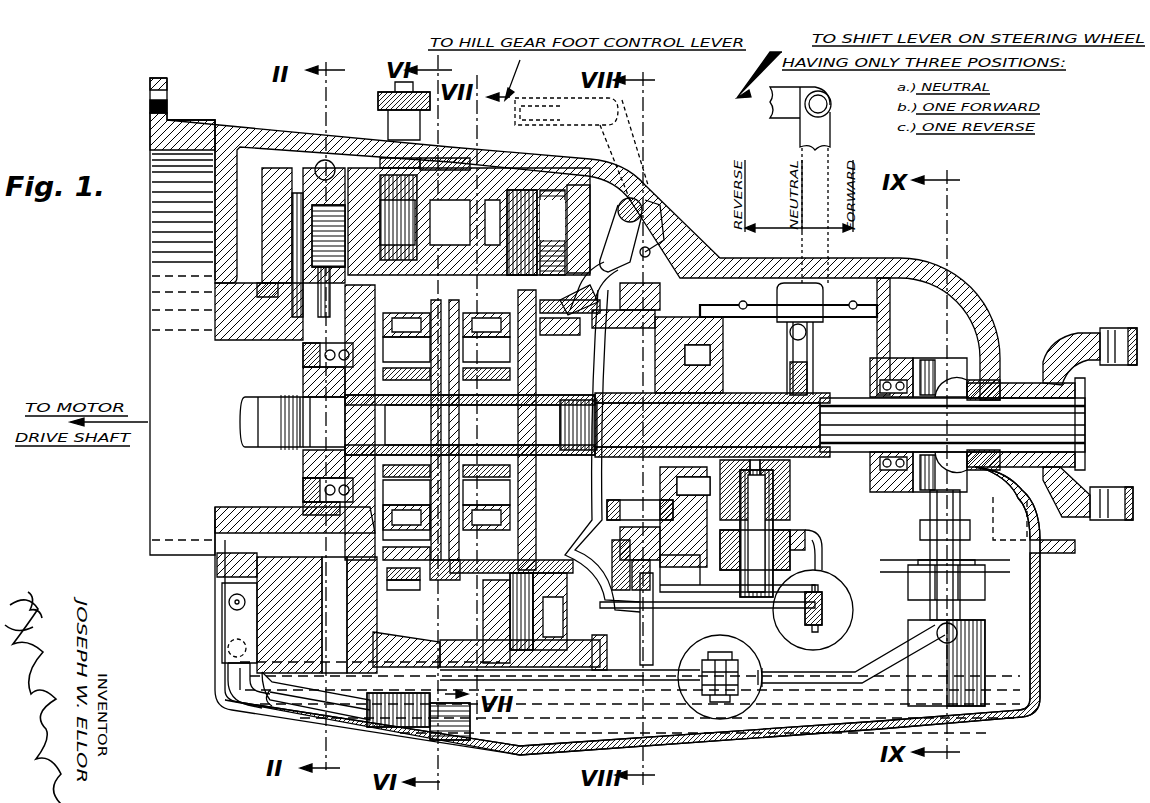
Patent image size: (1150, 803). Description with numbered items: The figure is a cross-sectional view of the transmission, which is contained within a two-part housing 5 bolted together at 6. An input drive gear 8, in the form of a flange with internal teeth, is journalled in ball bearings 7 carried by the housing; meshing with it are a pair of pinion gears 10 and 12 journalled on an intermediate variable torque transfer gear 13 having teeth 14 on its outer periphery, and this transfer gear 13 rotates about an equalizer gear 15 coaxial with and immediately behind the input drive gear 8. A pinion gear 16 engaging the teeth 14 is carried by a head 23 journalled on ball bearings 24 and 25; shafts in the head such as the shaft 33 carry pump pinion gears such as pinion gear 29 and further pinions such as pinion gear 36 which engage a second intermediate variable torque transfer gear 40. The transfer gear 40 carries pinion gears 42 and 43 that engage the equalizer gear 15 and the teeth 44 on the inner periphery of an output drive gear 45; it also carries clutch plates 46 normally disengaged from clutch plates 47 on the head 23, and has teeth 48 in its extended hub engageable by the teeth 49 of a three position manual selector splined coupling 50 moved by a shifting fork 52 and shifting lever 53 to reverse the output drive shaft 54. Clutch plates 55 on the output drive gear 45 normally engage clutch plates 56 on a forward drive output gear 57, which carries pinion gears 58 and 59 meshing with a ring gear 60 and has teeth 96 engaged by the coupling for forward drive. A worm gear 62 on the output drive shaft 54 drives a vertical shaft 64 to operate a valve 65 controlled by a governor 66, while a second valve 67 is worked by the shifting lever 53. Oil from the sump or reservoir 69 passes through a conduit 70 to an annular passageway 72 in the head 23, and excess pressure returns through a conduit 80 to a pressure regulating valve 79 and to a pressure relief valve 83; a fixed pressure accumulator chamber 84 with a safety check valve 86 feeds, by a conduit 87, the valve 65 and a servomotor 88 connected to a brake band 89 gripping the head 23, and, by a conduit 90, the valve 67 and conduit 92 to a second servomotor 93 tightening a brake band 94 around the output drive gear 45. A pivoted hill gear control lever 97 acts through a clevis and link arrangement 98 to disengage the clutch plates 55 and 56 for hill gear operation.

The two-part housing 5 is at (250, 147).
The bolts 6 is at (388, 115).
The ball bearings 7 is at (303, 352).
The input drive gear 8 is at (303, 380).
The pinion gear 10 is at (406, 346).
The pinion gear 12 is at (406, 502).
The intermediate variable torque transfer gear 13 is at (403, 580).
The teeth 14 is at (418, 590).
The intermediate variable torque transfer equalizer gear 15 is at (470, 425).
The pinion gear 16 is at (457, 165).
The head 23 is at (300, 700).
The ball bearing 24 is at (257, 290).
The ball bearing 25 is at (372, 308).
The pinion gear 29 is at (318, 160).
The shaft 33 is at (275, 222).
The pinion gear 36 is at (480, 168).
The second intermediate variable torque transfer gear 40 is at (459, 415).
The pinion gear 42 is at (486, 346).
The pinion gear 43 is at (486, 497).
The teeth 44 is at (460, 580).
The output drive gear 45 is at (570, 305).
The clutch plates 46 is at (545, 192).
The clutch plates 47 is at (518, 192).
The teeth 48 is at (507, 430).
The teeth 49 is at (690, 425).
The three position manual selector splined coupling 50 is at (762, 393).
The shifting fork 52 is at (790, 480).
The shifting lever 53 is at (832, 120).
The output drive shaft 54 is at (843, 400).
The clutch plates 55 is at (560, 326).
The clutch plates 56 is at (570, 485).
The forward drive output gear 57 is at (712, 368).
The pinion gear 58 is at (622, 292).
The pinion gear 59 is at (640, 530).
The ring gear 60 is at (664, 232).
The worm gear 62 is at (950, 365).
The vertical shaft 64 is at (935, 502).
The valve 65 is at (985, 648).
The governor 66 is at (985, 583).
The second valve 67 is at (774, 512).
The oil sump or reservoir 69 is at (520, 753).
The conduit 70 is at (225, 700).
The annular passageway 72 is at (303, 506).
The pressure regulating valve 79 is at (395, 728).
The conduit 80 is at (228, 683).
The pressure relief valve 83 is at (228, 649).
The fixed pressure accumulator chamber 84 is at (235, 622).
The safety check valve 86 is at (229, 603).
The conduit 87 is at (862, 570).
The servomotor 88 is at (716, 720).
The brake band 89 is at (432, 740).
The conduit 90 is at (707, 569).
The conduit 92 is at (810, 528).
The second servomotor 93 is at (853, 612).
The brake band 94 is at (470, 585).
The teeth 96 is at (705, 395).
The hill gear control lever 97 is at (645, 147).
The clevis and link arrangement 98 is at (598, 262).